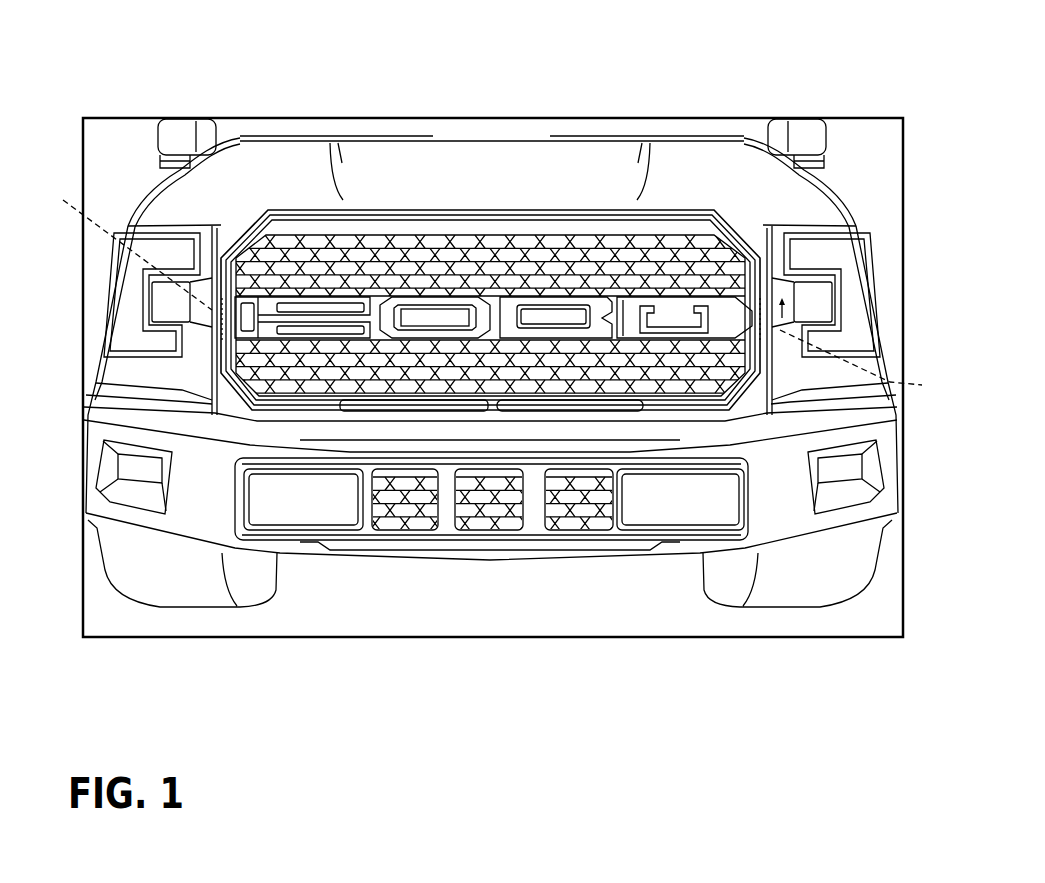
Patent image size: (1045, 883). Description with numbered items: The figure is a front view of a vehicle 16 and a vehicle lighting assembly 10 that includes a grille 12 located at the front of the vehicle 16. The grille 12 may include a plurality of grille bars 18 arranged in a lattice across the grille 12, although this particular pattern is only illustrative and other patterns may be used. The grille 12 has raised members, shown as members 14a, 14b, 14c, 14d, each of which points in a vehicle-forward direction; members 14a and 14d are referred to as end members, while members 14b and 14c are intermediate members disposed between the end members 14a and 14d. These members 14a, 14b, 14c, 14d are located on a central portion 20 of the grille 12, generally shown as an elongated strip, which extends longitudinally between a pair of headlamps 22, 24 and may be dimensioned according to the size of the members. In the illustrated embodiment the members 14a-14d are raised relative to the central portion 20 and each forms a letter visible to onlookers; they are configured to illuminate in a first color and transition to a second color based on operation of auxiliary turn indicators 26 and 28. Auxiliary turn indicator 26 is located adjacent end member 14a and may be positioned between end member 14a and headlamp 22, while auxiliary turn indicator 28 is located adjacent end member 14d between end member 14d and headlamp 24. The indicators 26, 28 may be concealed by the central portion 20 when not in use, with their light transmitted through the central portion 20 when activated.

The vehicle lighting assembly 10 is at (714, 196).
The grille 12 is at (513, 287).
The end member 14a is at (272, 300).
The intermediate member 14b is at (412, 302).
The intermediate member 14c is at (540, 305).
The end member 14d is at (638, 302).
The vehicle 16 is at (136, 162).
The grille bars 18 is at (248, 362).
The central portion 20 is at (748, 294).
The headlamp 22 is at (128, 302).
The headlamp 24 is at (855, 309).
The auxiliary turn indicator 26 is at (122, 249).
The auxiliary turn indicator 28 is at (866, 364).